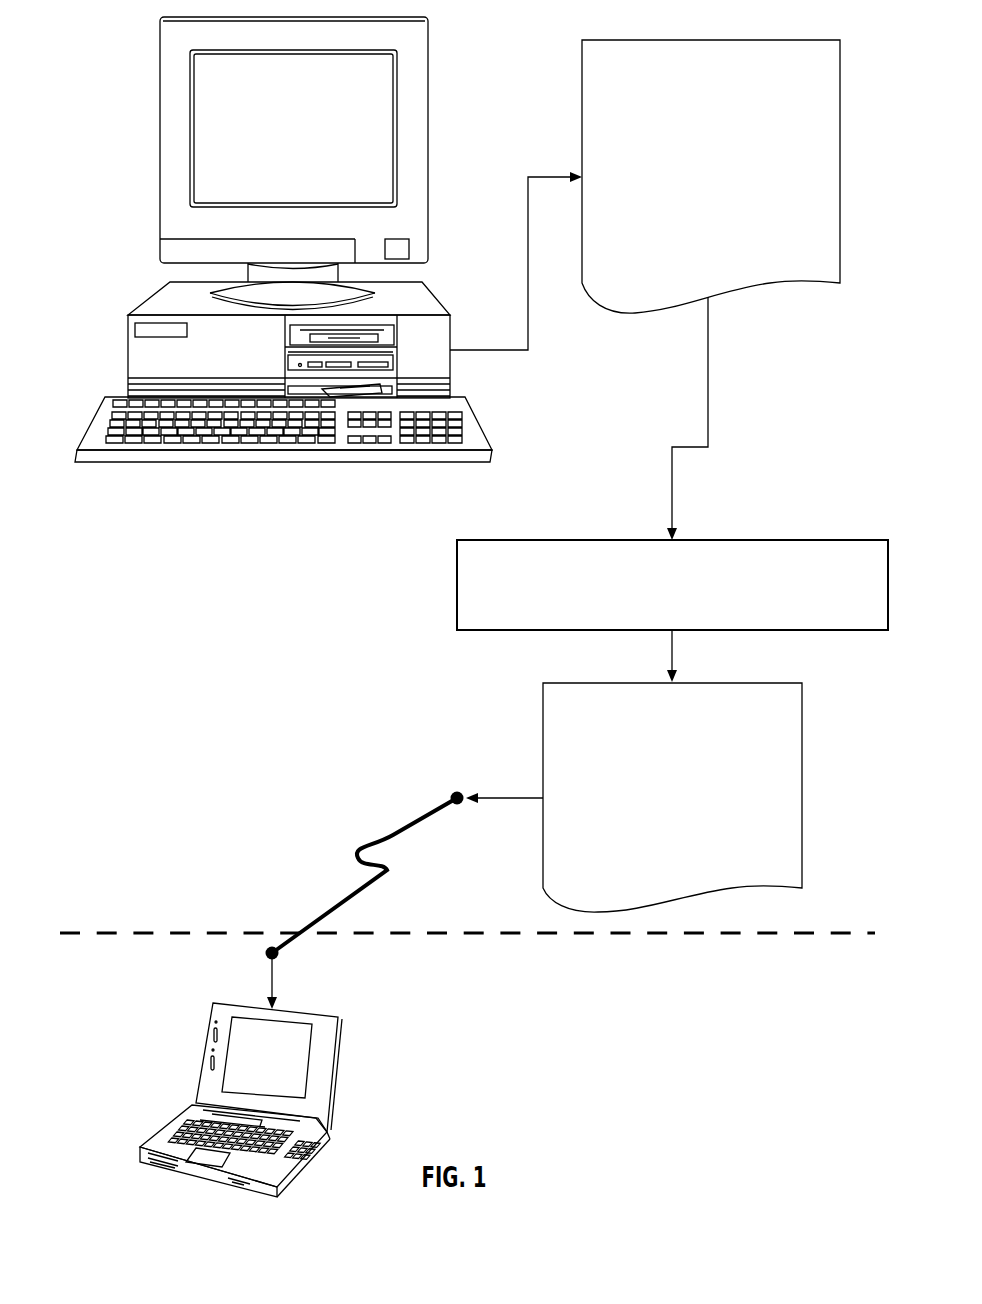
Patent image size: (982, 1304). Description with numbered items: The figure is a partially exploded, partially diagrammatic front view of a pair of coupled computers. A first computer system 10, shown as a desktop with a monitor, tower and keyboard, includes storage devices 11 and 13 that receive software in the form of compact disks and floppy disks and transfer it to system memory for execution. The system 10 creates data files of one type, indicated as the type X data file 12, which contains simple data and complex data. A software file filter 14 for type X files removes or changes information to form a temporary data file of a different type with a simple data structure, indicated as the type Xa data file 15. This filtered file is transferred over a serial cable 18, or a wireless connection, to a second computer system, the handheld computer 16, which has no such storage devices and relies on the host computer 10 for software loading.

The first computer system 10 is at (289, 278).
The storage device 11 is at (378, 335).
The type X data file 12 is at (840, 102).
The storage device 13 is at (357, 388).
The software file filter 14 is at (817, 538).
The type Xa data file 15 is at (802, 728).
The handheld computer 16 is at (363, 1085).
The serial cable 18 is at (387, 870).